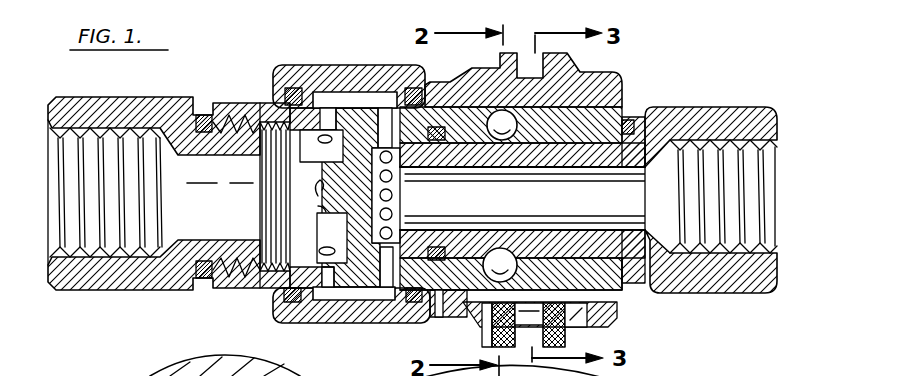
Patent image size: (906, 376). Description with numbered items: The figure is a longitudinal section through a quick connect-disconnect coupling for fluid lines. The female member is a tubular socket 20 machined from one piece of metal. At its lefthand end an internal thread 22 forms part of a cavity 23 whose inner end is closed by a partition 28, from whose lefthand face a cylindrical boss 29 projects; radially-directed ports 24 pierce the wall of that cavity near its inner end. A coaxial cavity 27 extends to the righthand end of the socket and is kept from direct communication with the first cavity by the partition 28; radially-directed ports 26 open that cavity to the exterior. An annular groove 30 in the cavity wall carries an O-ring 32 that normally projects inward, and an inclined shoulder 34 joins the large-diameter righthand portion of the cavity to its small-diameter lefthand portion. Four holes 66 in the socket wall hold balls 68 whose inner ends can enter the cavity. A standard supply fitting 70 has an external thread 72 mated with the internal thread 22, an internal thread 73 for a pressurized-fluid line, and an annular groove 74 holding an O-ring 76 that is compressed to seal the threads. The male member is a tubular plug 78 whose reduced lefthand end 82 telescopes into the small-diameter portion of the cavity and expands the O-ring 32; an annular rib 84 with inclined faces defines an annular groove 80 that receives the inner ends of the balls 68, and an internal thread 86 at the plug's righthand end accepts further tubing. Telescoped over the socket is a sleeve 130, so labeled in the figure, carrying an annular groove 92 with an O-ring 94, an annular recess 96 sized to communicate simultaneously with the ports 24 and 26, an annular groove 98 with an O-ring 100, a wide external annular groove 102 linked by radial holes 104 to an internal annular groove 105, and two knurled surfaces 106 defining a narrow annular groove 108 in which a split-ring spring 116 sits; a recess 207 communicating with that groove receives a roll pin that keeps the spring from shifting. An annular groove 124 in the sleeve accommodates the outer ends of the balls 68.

The tubular socket 20 is at (645, 125).
The internal thread 22 is at (238, 270).
The cavity 23 is at (285, 292).
The radially-directed ports 24 is at (312, 357).
The radially-directed ports 26 is at (376, 244).
The cavity 27 is at (425, 204).
The partition 28 is at (358, 270).
The cylindrical boss 29 is at (316, 224).
The annular groove 30 is at (502, 248).
The O-ring 32 is at (444, 250).
The inclined shoulder 34 is at (440, 318).
The holes 66 is at (520, 120).
The balls 68 is at (506, 140).
The supply fitting 70 is at (69, 302).
The external thread 72 is at (232, 115).
The internal thread 73 is at (118, 262).
The annular groove 74 is at (205, 260).
The O-ring 76 is at (196, 290).
The tubular plug 78 is at (755, 104).
The annular groove 80 is at (525, 255).
The lefthand end 82 is at (522, 200).
The annular rib 84 is at (470, 107).
The internal thread 86 is at (772, 212).
The annular groove 92 is at (294, 88).
The O-ring 94 is at (284, 98).
The annular recess 96 is at (342, 96).
The annular groove 98 is at (406, 88).
The O-ring 100 is at (438, 80).
The wide annular groove 102 is at (470, 315).
The holes 104 is at (430, 298).
The annular groove 105 is at (428, 312).
The annular knurled surfaces 106 is at (520, 347).
The narrow annular groove 108 is at (522, 55).
The split-ring spring 116 is at (548, 74).
The annular groove 124 is at (628, 118).
The collar 130 is at (620, 309).
The recess 207 is at (620, 367).